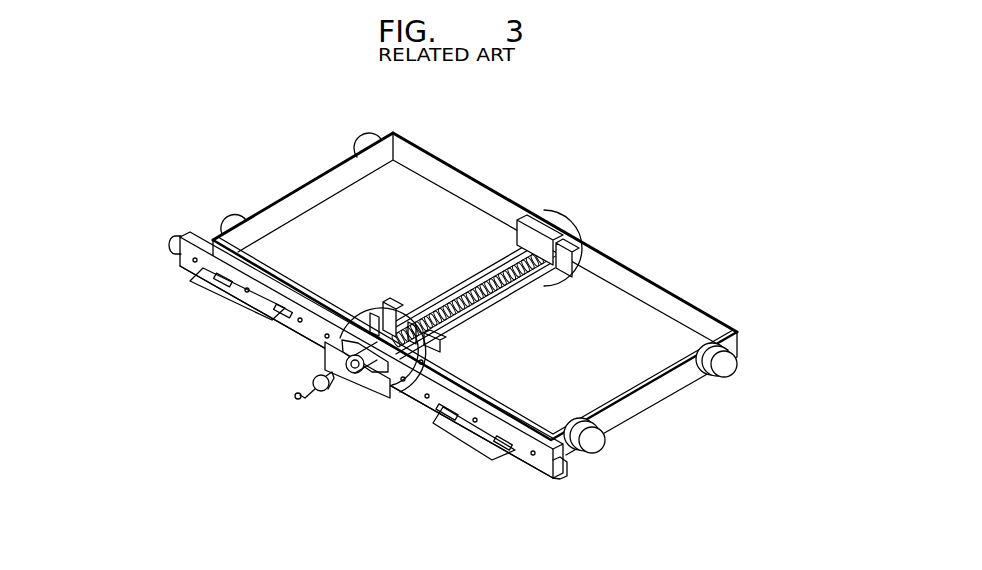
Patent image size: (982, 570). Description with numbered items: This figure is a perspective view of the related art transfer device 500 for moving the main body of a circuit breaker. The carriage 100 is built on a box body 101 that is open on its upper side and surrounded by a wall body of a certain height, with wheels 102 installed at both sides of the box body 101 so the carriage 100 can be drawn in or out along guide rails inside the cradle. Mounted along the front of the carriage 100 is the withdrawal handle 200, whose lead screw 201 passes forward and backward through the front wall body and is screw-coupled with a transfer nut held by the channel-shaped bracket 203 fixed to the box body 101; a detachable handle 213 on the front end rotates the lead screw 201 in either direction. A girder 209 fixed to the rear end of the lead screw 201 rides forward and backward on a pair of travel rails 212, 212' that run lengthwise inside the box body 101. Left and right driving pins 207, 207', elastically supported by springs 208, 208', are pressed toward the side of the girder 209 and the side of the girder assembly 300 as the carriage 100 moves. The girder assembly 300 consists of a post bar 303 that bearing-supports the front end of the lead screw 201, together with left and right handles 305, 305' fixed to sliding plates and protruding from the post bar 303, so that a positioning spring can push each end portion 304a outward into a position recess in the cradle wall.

The carriage 100 is at (288, 165).
The box body 101 is at (262, 208).
The wheels 102 is at (367, 145).
The withdrawal handle 200 is at (450, 317).
The lead screw 201 is at (558, 245).
The channel-shaped bracket 203 is at (432, 400).
The left driving pin 207 is at (309, 330).
The right driving pin 207' is at (405, 398).
The spring 208 is at (320, 369).
The spring 208' is at (510, 384).
The girder 209 is at (530, 233).
The travel rail 212 is at (475, 256).
The travel rail 212' is at (603, 248).
The handle 213 is at (300, 405).
The girder assembly 300 is at (520, 488).
The post bar 303 is at (190, 268).
The end portion 304a is at (176, 237).
The left handle 305 is at (230, 308).
The right handle 305' is at (468, 455).
The transfer device 500 is at (677, 273).